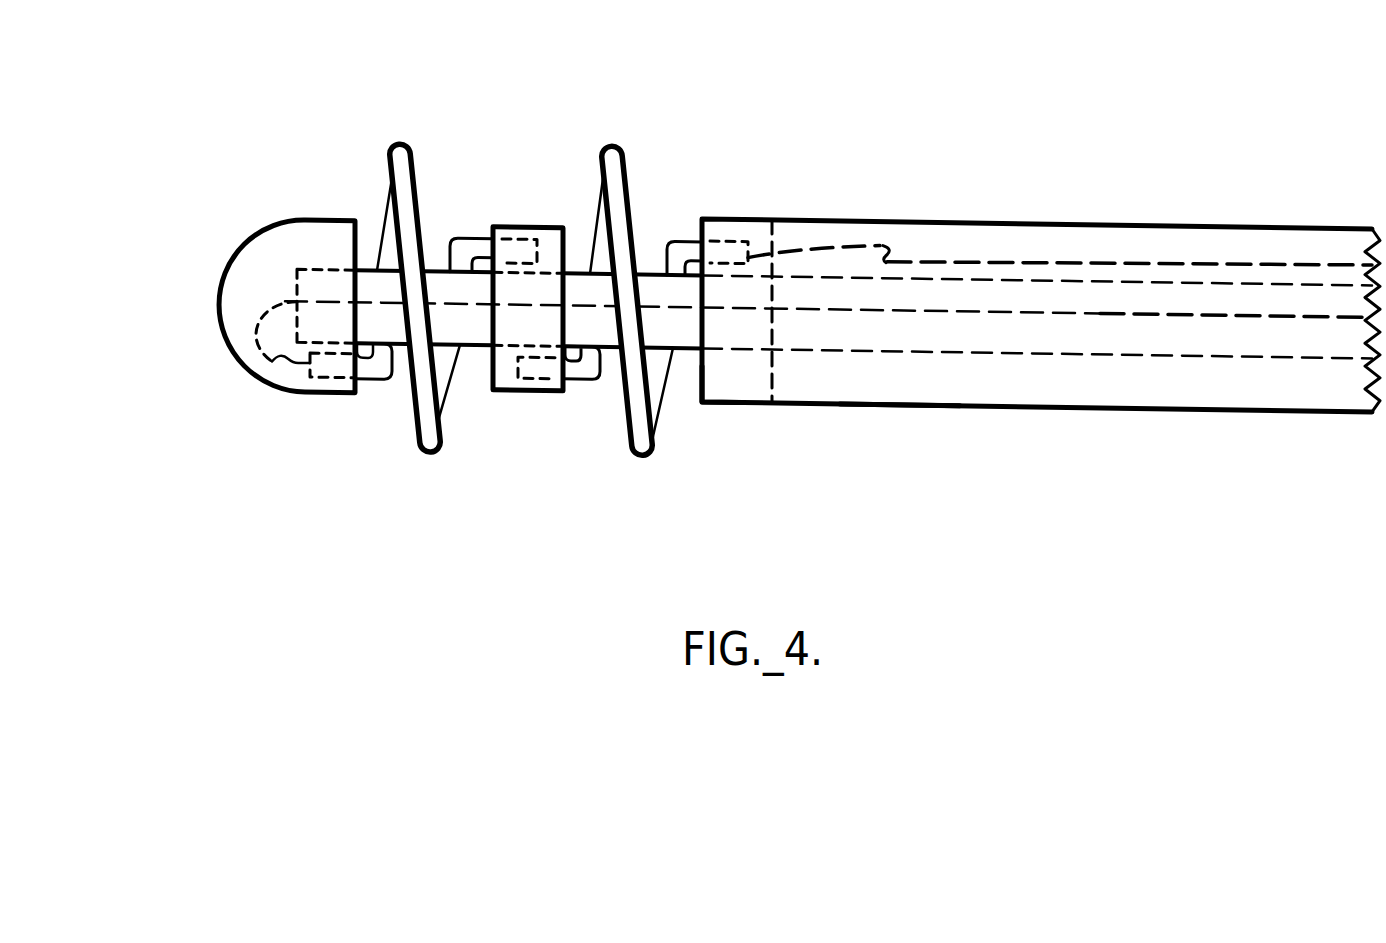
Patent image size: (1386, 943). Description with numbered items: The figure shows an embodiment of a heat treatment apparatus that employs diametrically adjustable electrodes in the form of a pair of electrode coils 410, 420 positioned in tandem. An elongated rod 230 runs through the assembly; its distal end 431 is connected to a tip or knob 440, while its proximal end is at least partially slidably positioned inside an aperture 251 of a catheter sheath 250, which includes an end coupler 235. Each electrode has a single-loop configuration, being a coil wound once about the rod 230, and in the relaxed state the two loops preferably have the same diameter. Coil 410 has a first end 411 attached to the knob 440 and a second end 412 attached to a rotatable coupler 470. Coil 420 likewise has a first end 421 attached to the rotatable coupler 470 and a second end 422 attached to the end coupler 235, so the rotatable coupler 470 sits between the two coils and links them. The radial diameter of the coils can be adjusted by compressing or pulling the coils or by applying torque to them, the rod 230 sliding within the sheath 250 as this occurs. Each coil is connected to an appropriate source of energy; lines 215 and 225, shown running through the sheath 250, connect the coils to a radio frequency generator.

The line 215 is at (1050, 262).
The line 225 is at (1107, 318).
The elongated rod 230 is at (823, 277).
The end coupler 235 is at (728, 388).
The catheter sheath 250 is at (1155, 224).
The aperture 251 is at (887, 394).
The electrode coil 410 is at (401, 140).
The first end of coil 410 411 is at (373, 367).
The second end of coil 410 412 is at (522, 242).
The electrode coil 420 is at (605, 148).
The first end of coil 420 421 is at (542, 378).
The second end of coil 420 422 is at (722, 250).
The distal end 431 is at (330, 268).
The tip or knob 440 is at (218, 305).
The rotatable coupler 470 is at (548, 227).